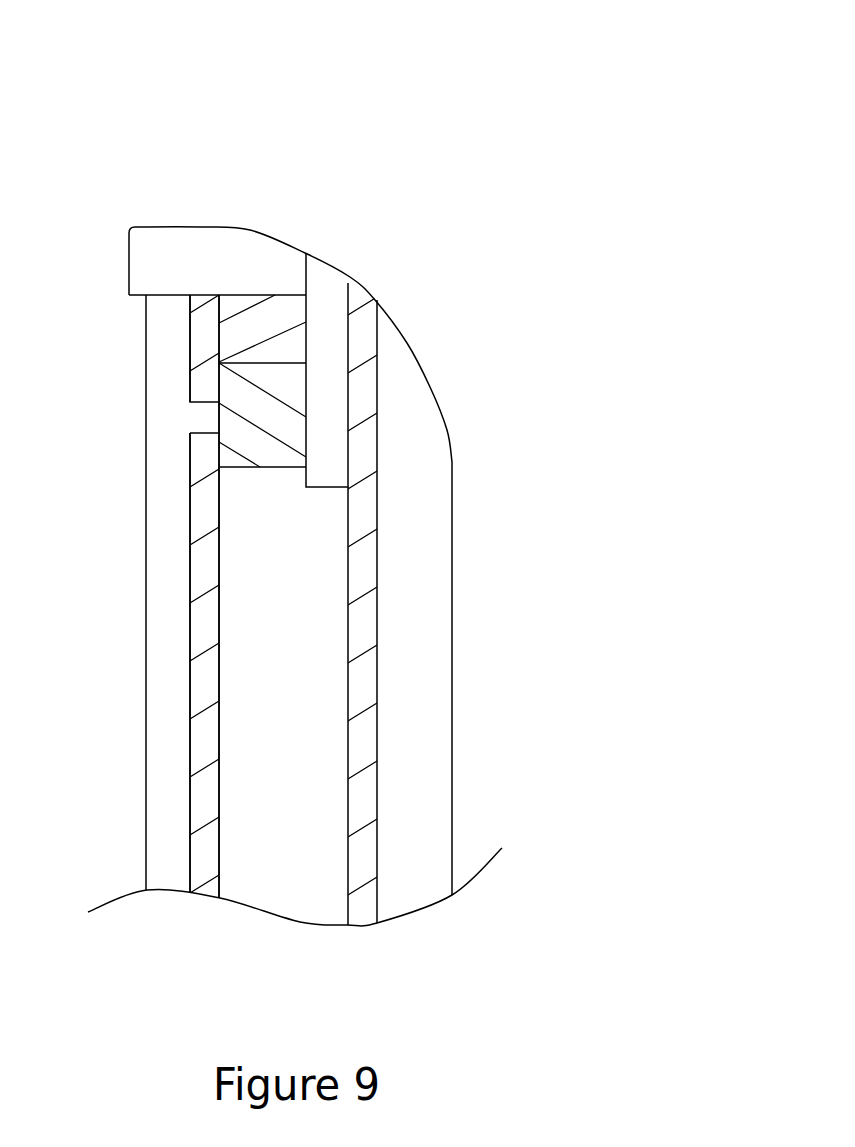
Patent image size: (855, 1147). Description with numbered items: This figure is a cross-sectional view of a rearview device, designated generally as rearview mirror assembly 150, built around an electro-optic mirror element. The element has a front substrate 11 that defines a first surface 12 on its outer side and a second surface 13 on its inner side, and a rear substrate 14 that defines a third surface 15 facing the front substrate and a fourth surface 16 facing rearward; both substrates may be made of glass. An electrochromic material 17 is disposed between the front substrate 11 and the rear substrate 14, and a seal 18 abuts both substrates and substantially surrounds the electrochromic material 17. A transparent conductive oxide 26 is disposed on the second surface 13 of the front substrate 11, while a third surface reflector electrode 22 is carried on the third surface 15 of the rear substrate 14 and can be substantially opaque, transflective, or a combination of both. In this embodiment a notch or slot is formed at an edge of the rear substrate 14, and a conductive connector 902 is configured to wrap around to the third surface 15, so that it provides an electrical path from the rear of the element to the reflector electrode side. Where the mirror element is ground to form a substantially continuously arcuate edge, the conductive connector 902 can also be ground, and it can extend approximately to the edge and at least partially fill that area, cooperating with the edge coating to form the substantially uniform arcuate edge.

The connector assembly 150 is at (593, 98).
The conductive connector 902 is at (173, 265).
The transparent conductive oxide 26 is at (362, 332).
The front substrate 11 is at (410, 437).
The first surface 12 is at (453, 663).
The second surface 13 is at (375, 818).
The seal 18 is at (248, 465).
The third surface 15 is at (190, 592).
The fourth surface 16 is at (146, 718).
The rear substrate 14 is at (168, 843).
The third surface reflector electrode 22 is at (205, 885).
The electrochromic material 17 is at (272, 855).